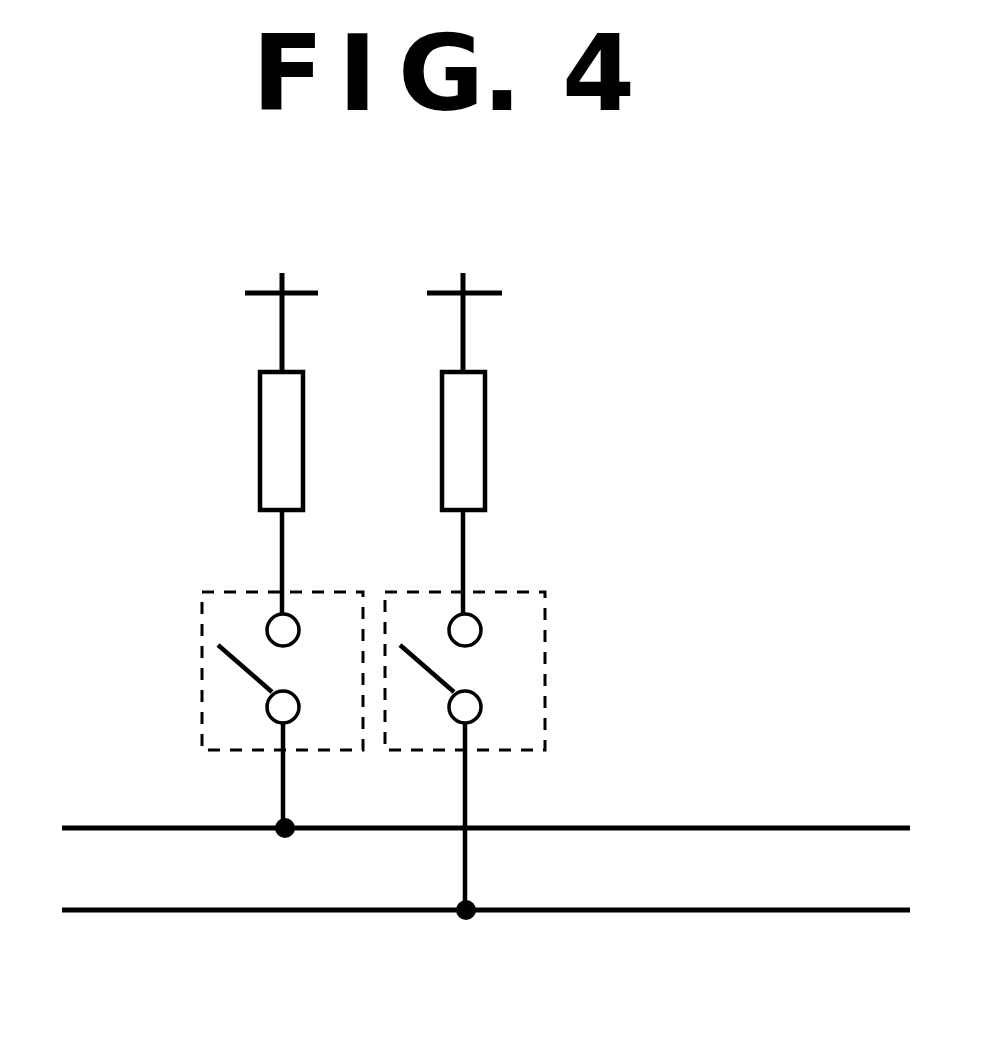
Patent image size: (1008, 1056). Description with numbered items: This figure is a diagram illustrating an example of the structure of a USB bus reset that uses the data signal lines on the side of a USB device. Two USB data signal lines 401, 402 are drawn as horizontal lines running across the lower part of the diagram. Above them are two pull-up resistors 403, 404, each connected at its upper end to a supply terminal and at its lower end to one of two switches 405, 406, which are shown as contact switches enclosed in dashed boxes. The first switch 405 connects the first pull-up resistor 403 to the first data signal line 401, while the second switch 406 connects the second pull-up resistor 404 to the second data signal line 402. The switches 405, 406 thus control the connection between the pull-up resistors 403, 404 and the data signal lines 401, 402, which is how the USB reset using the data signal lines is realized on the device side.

The USB data signal line 401 is at (832, 828).
The USB data signal line 402 is at (832, 910).
The pull-up resistor 403 is at (262, 428).
The pull-up resistor 404 is at (487, 426).
The switch 405 is at (198, 633).
The switch 406 is at (545, 638).